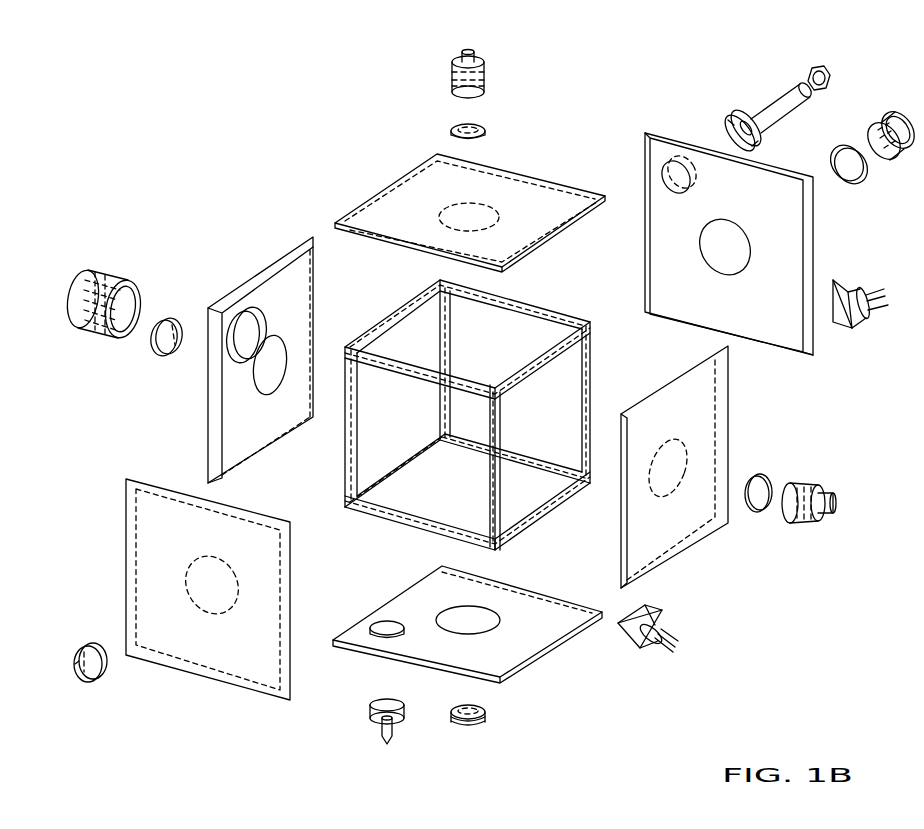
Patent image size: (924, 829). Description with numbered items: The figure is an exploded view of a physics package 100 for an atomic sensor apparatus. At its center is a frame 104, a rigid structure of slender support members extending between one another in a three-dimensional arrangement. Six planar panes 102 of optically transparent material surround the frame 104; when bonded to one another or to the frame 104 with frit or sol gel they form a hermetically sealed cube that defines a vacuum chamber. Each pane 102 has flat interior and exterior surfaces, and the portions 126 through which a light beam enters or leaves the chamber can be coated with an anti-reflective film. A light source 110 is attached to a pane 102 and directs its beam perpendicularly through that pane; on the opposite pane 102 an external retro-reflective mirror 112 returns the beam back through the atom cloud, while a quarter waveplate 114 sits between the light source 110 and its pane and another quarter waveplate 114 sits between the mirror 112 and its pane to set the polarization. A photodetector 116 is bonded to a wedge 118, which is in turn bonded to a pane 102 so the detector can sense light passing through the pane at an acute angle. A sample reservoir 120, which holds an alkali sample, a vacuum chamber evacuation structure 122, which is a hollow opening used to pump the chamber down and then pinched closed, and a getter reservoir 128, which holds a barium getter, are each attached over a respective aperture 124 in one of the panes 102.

The physics package 100 is at (293, 68).
The pane 102 is at (399, 140).
The frame 104 is at (585, 318).
The light source 110 is at (489, 74).
The retro-reflective mirror 112 is at (172, 345).
The quarter waveplate 114 is at (490, 134).
The photodetector 116 is at (872, 312).
The wedge 118 is at (835, 322).
The sample reservoir 120 is at (768, 108).
The vacuum chamber evacuation structure 122 is at (372, 723).
The aperture 124 is at (245, 330).
The portion of the pane coated with anti-reflective film 126 is at (270, 375).
The getter reservoir 128 is at (107, 272).